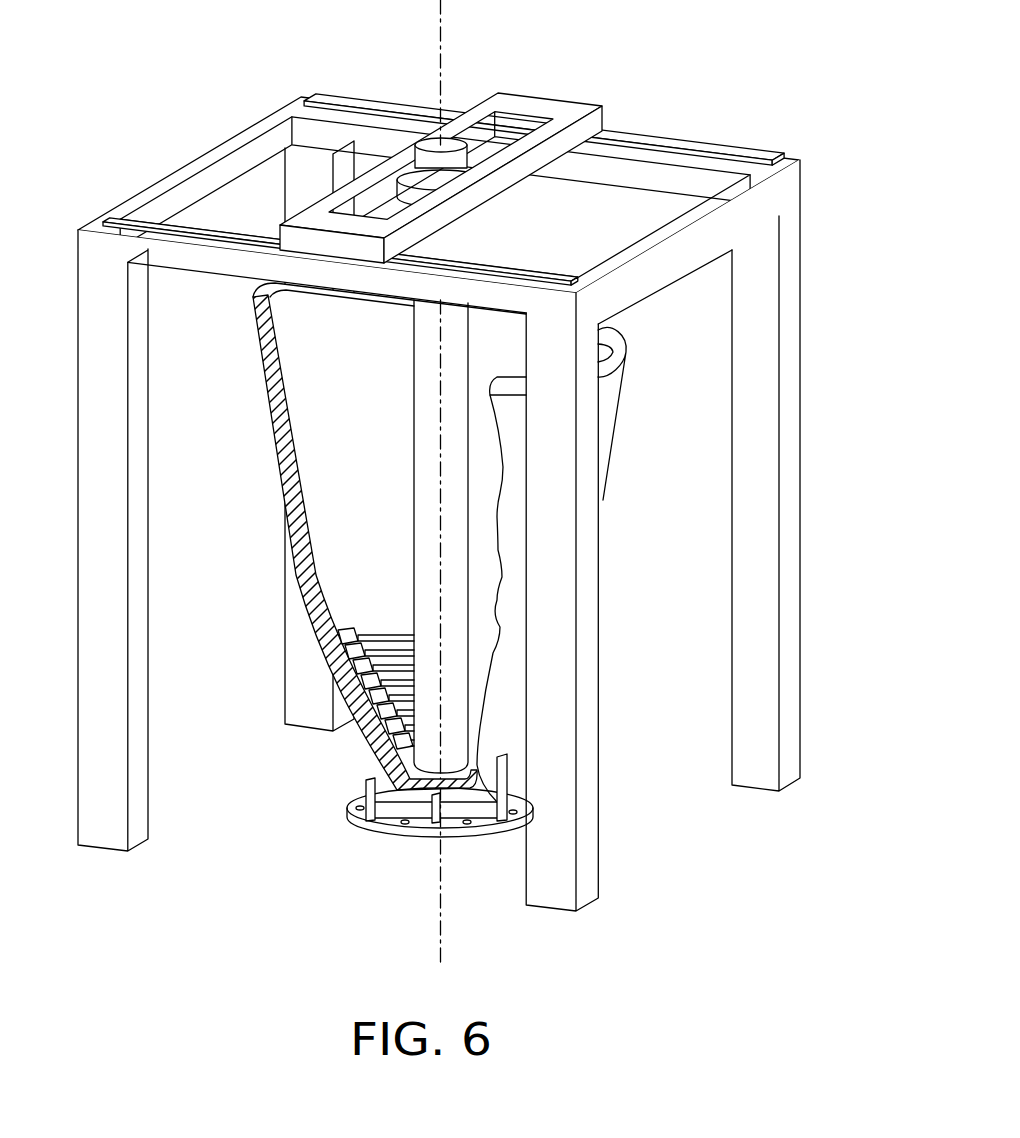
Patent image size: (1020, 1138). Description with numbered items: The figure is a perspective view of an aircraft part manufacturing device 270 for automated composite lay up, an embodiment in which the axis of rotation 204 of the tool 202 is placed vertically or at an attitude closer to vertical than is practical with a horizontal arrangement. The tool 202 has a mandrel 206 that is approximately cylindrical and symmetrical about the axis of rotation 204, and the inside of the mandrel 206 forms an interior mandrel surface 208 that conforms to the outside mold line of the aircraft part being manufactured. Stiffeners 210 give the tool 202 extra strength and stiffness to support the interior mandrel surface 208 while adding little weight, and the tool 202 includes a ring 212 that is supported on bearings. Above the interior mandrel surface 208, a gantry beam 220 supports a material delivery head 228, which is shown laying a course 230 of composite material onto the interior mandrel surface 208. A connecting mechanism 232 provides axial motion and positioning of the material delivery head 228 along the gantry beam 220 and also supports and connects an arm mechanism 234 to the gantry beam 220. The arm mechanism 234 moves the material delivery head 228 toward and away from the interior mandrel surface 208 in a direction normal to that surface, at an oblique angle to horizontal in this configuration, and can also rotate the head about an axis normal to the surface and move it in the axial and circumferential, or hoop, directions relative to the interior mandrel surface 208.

The tool 202 is at (390, 820).
The axis of rotation 204 is at (440, 52).
The mandrel 206 is at (267, 413).
The interior mandrel surface 208 is at (369, 345).
The stiffeners 210 is at (357, 797).
The ring 212 is at (357, 818).
The gantry beam 220 is at (647, 172).
The material delivery head 228 is at (357, 665).
The course 230 is at (380, 758).
The connecting mechanism 232 is at (347, 192).
The arm mechanism 234 is at (392, 640).
The aircraft part manufacturing device 270 is at (173, 960).